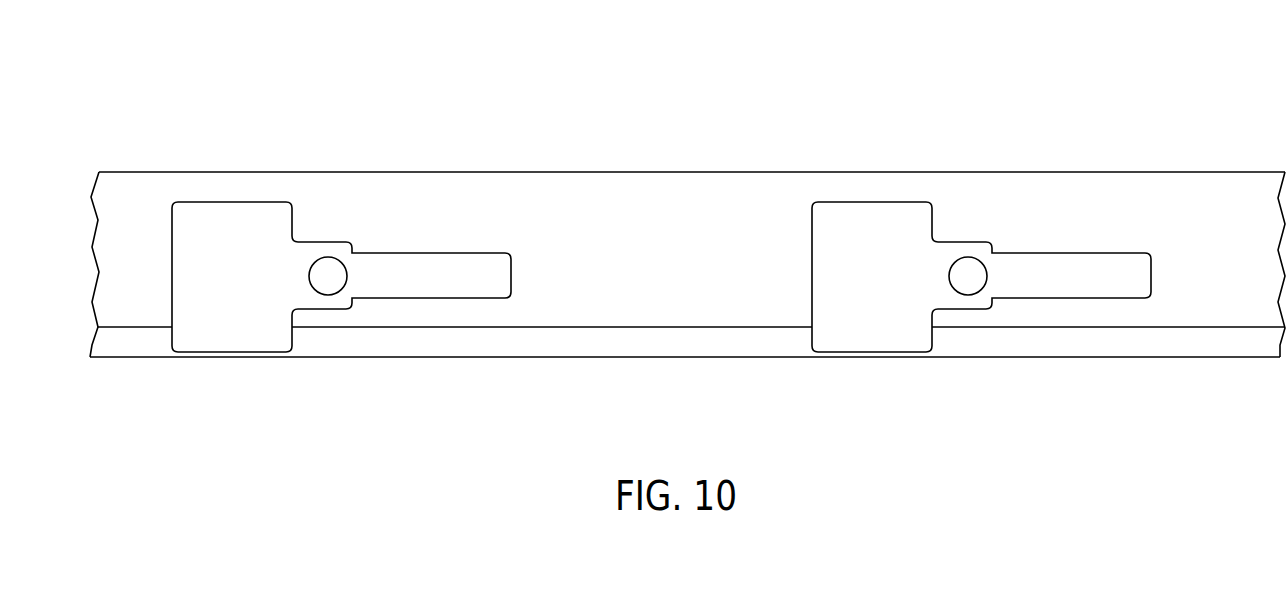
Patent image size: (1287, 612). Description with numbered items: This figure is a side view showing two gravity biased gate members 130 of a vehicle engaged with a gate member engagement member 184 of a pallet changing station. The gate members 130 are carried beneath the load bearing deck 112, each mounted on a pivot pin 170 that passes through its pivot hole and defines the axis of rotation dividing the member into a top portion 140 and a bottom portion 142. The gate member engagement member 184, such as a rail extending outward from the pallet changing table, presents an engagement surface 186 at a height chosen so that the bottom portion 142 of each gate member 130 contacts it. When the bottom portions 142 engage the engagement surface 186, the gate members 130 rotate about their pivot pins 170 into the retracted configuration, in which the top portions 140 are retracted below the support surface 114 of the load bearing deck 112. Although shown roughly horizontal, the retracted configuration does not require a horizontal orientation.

The load bearing deck 112 is at (687, 207).
The support surface 114 is at (1220, 172).
The gravity biased gate member 130 is at (633, 235).
The top portion 140 is at (438, 262).
The bottom portion 142 is at (195, 262).
The pivot pin 170 is at (309, 278).
The gate member engagement member 184 is at (1187, 358).
The engagement surface 186 is at (643, 358).